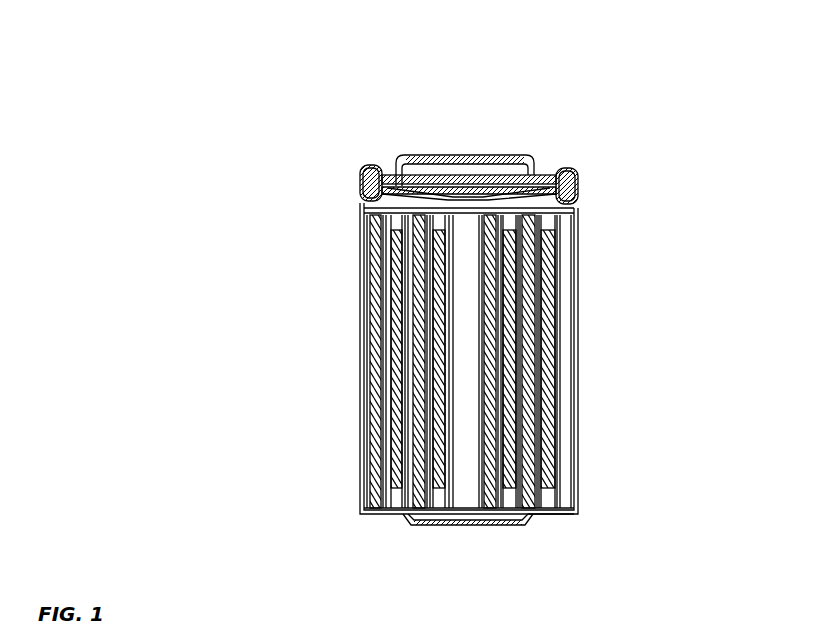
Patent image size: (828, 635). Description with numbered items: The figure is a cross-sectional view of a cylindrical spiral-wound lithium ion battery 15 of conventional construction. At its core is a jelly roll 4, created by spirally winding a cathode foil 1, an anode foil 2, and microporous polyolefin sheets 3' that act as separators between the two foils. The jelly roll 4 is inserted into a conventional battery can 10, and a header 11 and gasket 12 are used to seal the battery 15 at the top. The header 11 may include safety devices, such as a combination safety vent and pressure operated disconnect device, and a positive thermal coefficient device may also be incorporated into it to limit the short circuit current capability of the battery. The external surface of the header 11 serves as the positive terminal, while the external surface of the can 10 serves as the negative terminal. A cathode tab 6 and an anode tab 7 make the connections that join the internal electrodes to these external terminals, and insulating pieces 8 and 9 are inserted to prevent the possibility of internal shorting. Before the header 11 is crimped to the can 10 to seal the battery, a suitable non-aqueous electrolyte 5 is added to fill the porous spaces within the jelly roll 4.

The cathode foil 1 is at (534, 406).
The anode foil 2 is at (360, 402).
The separator 3' is at (332, 361).
The jelly roll 4 is at (351, 202).
The non-aqueous electrolyte 5 is at (528, 346).
The cathode tab 6 is at (424, 175).
The anode tab 7 is at (406, 519).
The insulating piece 8 is at (357, 163).
The insulating piece 9 is at (558, 512).
The battery can 10 is at (576, 267).
The header 11 is at (436, 144).
The gasket 12 is at (574, 162).
The battery 15 is at (551, 80).